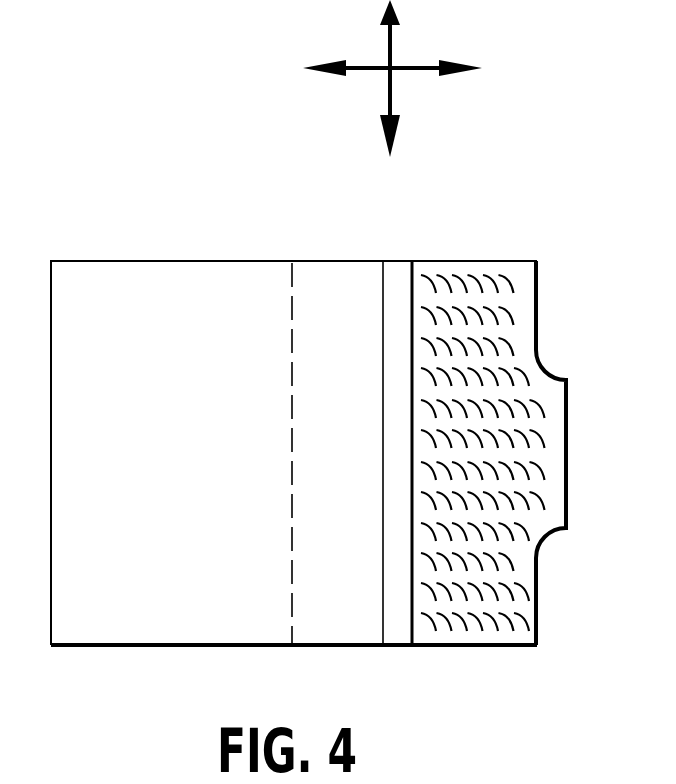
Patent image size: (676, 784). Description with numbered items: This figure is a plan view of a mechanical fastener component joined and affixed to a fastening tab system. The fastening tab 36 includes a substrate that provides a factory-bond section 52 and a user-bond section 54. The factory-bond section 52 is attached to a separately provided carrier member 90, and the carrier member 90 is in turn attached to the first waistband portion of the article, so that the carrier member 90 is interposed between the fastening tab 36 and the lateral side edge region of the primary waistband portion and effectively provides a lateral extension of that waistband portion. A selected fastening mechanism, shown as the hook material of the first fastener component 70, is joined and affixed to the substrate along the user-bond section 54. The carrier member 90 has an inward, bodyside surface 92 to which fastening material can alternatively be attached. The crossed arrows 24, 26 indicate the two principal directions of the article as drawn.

The transverse direction arrow 24 is at (416, 70).
The longitudinal direction arrow 26 is at (393, 45).
The fastening tab 36 is at (400, 648).
The factory-bond section 52 is at (87, 635).
The user-bond section 54 is at (523, 272).
The first fastener component 70 is at (525, 373).
The carrier member 90 is at (173, 282).
The inward, bodyside surface 92 is at (194, 466).